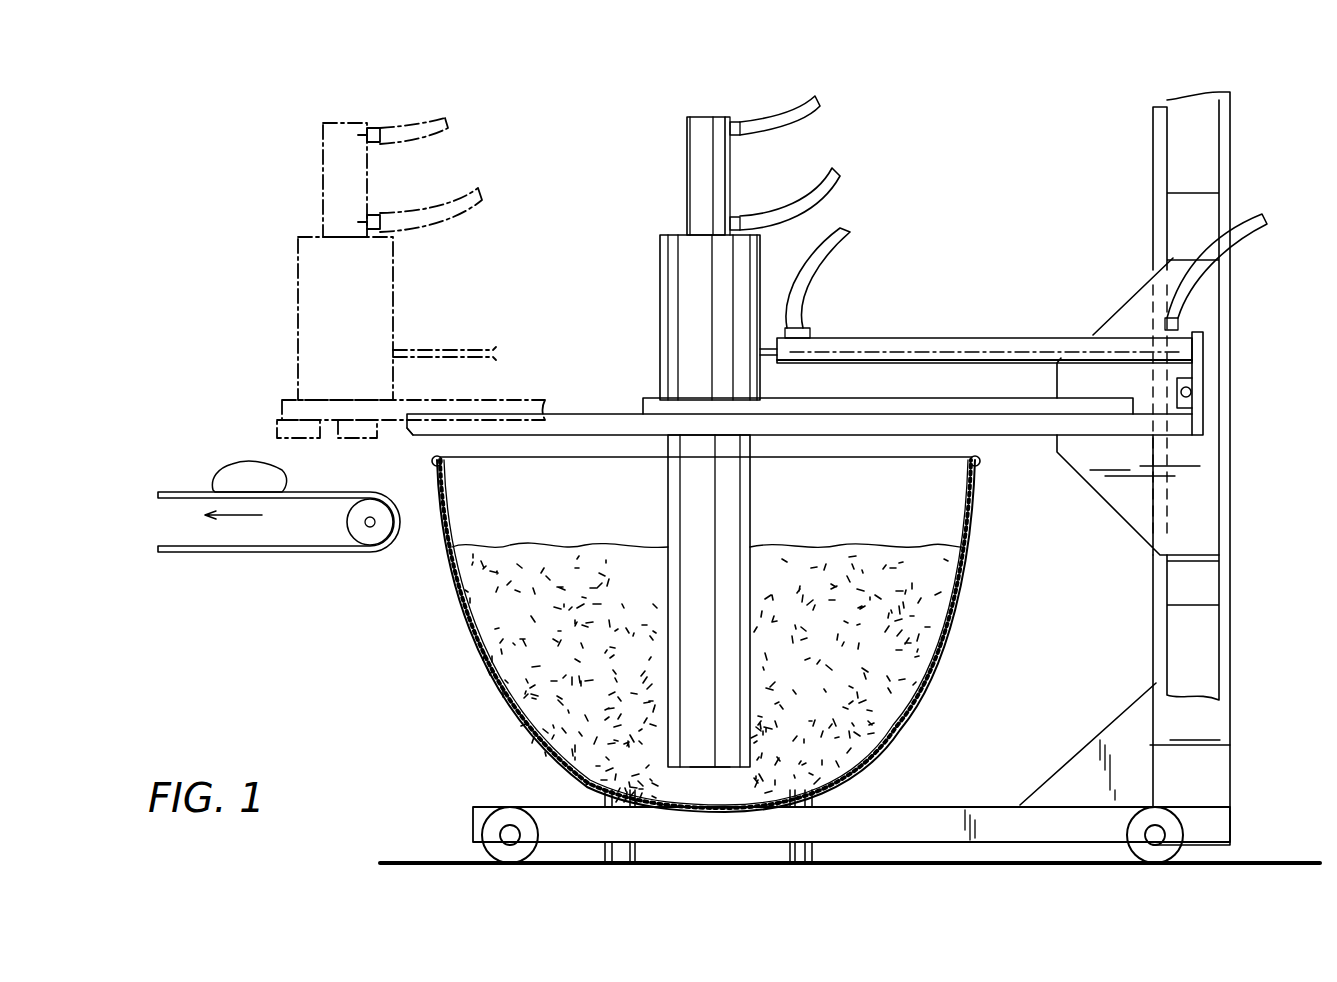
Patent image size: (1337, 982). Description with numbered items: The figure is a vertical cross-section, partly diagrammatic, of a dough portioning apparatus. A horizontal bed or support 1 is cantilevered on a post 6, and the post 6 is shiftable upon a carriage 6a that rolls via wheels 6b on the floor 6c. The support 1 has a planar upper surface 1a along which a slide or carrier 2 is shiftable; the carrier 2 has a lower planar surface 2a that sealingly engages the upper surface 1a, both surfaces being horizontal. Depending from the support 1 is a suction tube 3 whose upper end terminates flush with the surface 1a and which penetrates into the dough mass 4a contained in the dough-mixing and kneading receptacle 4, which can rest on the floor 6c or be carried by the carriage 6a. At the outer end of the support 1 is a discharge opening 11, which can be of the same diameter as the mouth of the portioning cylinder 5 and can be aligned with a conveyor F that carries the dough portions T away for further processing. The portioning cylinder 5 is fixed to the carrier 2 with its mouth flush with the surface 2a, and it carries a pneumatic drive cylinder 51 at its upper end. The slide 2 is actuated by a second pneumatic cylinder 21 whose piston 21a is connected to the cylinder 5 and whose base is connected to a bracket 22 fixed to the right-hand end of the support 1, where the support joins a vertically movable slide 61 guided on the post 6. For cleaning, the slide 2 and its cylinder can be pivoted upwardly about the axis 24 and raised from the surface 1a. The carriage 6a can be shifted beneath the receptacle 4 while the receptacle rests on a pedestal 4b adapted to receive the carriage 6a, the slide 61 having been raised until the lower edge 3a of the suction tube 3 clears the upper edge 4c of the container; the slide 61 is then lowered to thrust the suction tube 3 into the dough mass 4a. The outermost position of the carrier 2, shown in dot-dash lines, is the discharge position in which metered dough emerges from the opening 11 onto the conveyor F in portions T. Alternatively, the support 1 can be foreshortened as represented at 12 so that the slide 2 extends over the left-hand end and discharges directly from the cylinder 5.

The horizontal support 1 is at (275, 423).
The planar upper surface 1a is at (610, 403).
The discharge opening 11 is at (352, 440).
The foreshortened bed end 12 is at (412, 438).
The slide or carrier 2 is at (650, 388).
The lower planar surface 2a is at (1028, 420).
The second pneumatic cylinder 21 is at (955, 346).
The piston 21a is at (768, 358).
The bracket 22 is at (1196, 364).
The axis 24 is at (1192, 392).
The suction tube 3 is at (654, 507).
The lower edge of the suction tube 3a is at (708, 778).
The dough-mixing and kneading receptacle 4 is at (955, 657).
The dough mass 4a is at (518, 646).
The pedestal 4b is at (820, 798).
The upper edge of the container 4c is at (433, 466).
The portioning cylinder 5 is at (647, 316).
The pneumatic drive cylinder 51 is at (688, 200).
The post 6 is at (1253, 640).
The carriage 6a is at (910, 830).
The wheels 6b is at (514, 850).
The floor 6c is at (425, 855).
The vertically movable slide 61 is at (1215, 510).
The dough portions T is at (228, 478).
The conveyor F is at (275, 552).